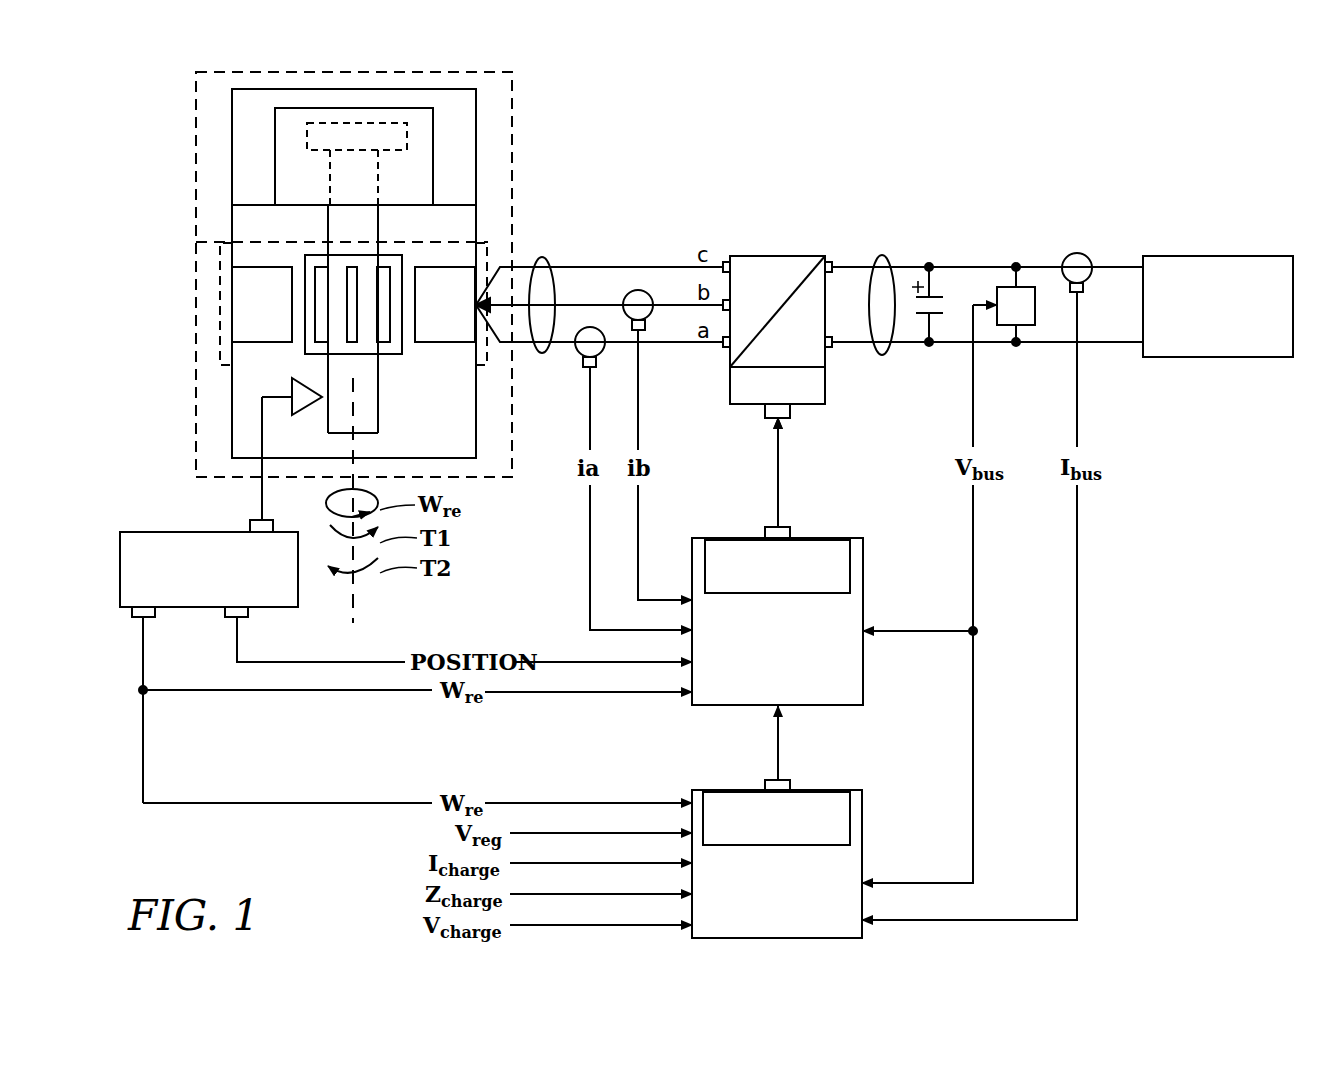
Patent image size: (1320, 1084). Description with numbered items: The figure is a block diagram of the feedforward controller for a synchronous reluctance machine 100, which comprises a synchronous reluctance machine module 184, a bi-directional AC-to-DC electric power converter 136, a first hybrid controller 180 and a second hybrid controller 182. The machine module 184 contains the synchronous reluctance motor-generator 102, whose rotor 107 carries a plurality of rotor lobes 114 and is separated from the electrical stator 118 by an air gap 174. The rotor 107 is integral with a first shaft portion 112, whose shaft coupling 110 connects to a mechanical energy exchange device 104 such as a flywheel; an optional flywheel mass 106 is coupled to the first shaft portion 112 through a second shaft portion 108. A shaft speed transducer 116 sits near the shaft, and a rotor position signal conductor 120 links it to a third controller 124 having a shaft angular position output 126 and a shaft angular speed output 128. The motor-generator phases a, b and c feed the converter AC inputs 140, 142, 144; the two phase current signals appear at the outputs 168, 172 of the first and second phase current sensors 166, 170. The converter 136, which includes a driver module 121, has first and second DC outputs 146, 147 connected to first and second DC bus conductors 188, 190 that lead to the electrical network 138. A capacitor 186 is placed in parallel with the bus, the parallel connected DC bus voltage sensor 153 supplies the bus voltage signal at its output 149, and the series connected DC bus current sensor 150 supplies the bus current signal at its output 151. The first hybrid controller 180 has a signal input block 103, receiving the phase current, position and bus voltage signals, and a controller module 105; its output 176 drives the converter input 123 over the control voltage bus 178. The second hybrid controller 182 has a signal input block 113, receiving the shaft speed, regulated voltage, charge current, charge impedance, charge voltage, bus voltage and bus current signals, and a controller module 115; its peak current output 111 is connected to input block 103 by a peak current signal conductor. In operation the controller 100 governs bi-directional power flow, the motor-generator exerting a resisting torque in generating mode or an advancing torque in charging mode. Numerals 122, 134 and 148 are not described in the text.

The feedforward controller for a synchronous reluctance machine 100 is at (985, 135).
The synchronous reluctance motor-generator 102 is at (220, 283).
The first hybrid controller signal input block 103 is at (820, 625).
The mechanical energy exchange device 104 is at (287, 118).
The first hybrid controller module 105 is at (797, 586).
The flywheel mass 106 is at (407, 140).
The rotor 107 is at (402, 347).
The second shaft portion 108 is at (378, 177).
The shaft coupling 110 is at (320, 212).
The peak current output 111 is at (765, 782).
The first shaft portion 112 is at (360, 212).
The second hybrid controller signal input block 113 is at (830, 872).
The rotor lobes 114 is at (380, 290).
The second hybrid controller module 115 is at (797, 836).
The shaft speed transducer 116 is at (292, 381).
The electrical stator 118 is at (282, 317).
The rotor position signal conductor 120 is at (262, 436).
The driver module 121 is at (797, 399).
The position sensor input port 122 is at (258, 520).
The converter input 123 is at (770, 412).
The third controller 124 is at (143, 552).
The shaft angular position output 126 is at (243, 617).
The shaft angular speed wre signal output 128 is at (150, 617).
The three-phase connection 134 is at (538, 257).
The bi-directional AC-to-DC electric power converter 136 is at (775, 256).
The electrical network 138 is at (1222, 256).
The converter AC input 140 is at (722, 347).
The converter AC input 142 is at (722, 305).
The converter AC input 144 is at (722, 262).
The first converter DC output 146 is at (880, 257).
The second converter DC output 147 is at (832, 347).
The positive DC terminal 148 is at (828, 262).
The output of DC bus voltage sensor 149 is at (985, 307).
The DC bus current sensor 150 is at (1077, 253).
The output of DC bus current sensor 151 is at (1083, 287).
The DC bus voltage sensor 153 is at (1003, 287).
The first phase current sensor 166 is at (590, 327).
The output of first phase current sensor 168 is at (585, 365).
The second phase current sensor 170 is at (638, 290).
The output of second phase current sensor 172 is at (645, 327).
The air gap 174 is at (300, 272).
The first hybrid controller output 176 is at (770, 530).
The control voltage bus 178 is at (778, 483).
The first hybrid controller 180 is at (863, 543).
The second hybrid controller 182 is at (862, 795).
The synchronous reluctance machine module 184 is at (780, 737).
The capacitor 186 is at (933, 297).
The first DC bus conductor 188 is at (1130, 342).
The second DC bus conductor 190 is at (1133, 267).